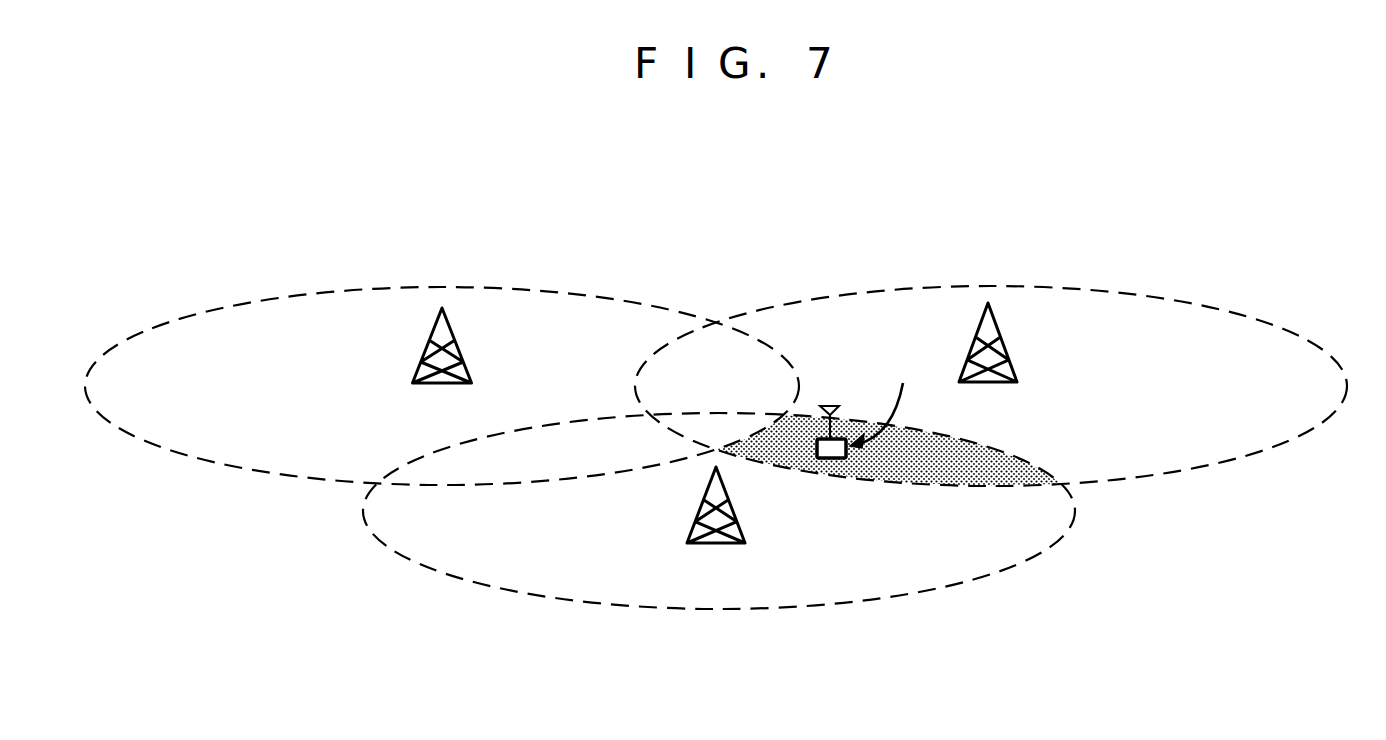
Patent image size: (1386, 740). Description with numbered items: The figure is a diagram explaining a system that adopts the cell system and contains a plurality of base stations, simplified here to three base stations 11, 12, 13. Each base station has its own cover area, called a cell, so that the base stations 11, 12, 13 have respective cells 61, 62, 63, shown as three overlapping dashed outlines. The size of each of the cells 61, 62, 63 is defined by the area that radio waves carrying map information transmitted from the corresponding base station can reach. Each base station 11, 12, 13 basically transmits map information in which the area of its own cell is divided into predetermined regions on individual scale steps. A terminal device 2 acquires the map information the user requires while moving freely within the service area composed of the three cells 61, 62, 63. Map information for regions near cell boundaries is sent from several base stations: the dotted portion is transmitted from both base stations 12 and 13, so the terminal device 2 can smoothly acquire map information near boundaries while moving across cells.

The cell 61 is at (397, 288).
The cell 62 is at (710, 612).
The cell 63 is at (1082, 285).
The base station 11 is at (420, 372).
The base station 12 is at (693, 528).
The base station 13 is at (1017, 360).
The terminal device 2 is at (842, 440).